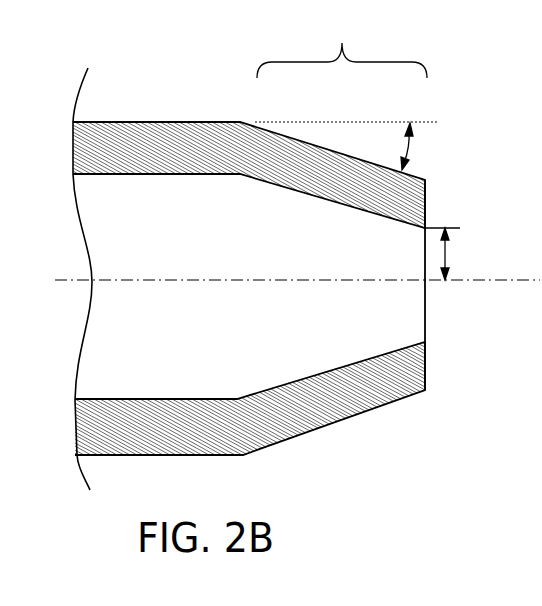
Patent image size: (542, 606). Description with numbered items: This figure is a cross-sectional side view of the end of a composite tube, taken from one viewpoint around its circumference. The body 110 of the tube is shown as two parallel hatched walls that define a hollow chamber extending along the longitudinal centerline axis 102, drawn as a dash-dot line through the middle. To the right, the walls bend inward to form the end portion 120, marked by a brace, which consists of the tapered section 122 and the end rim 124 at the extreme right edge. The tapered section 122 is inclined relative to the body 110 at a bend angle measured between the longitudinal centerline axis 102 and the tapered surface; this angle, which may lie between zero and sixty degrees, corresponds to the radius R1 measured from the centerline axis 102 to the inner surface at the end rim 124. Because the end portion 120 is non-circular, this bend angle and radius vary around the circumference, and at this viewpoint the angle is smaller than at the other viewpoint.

The longitudinal centerline axis 102 is at (75, 283).
The body 110 is at (135, 133).
The end portion 120 is at (342, 47).
The tapered section 122 is at (330, 410).
The end rim 124 is at (428, 360).
The radius R1 is at (446, 253).